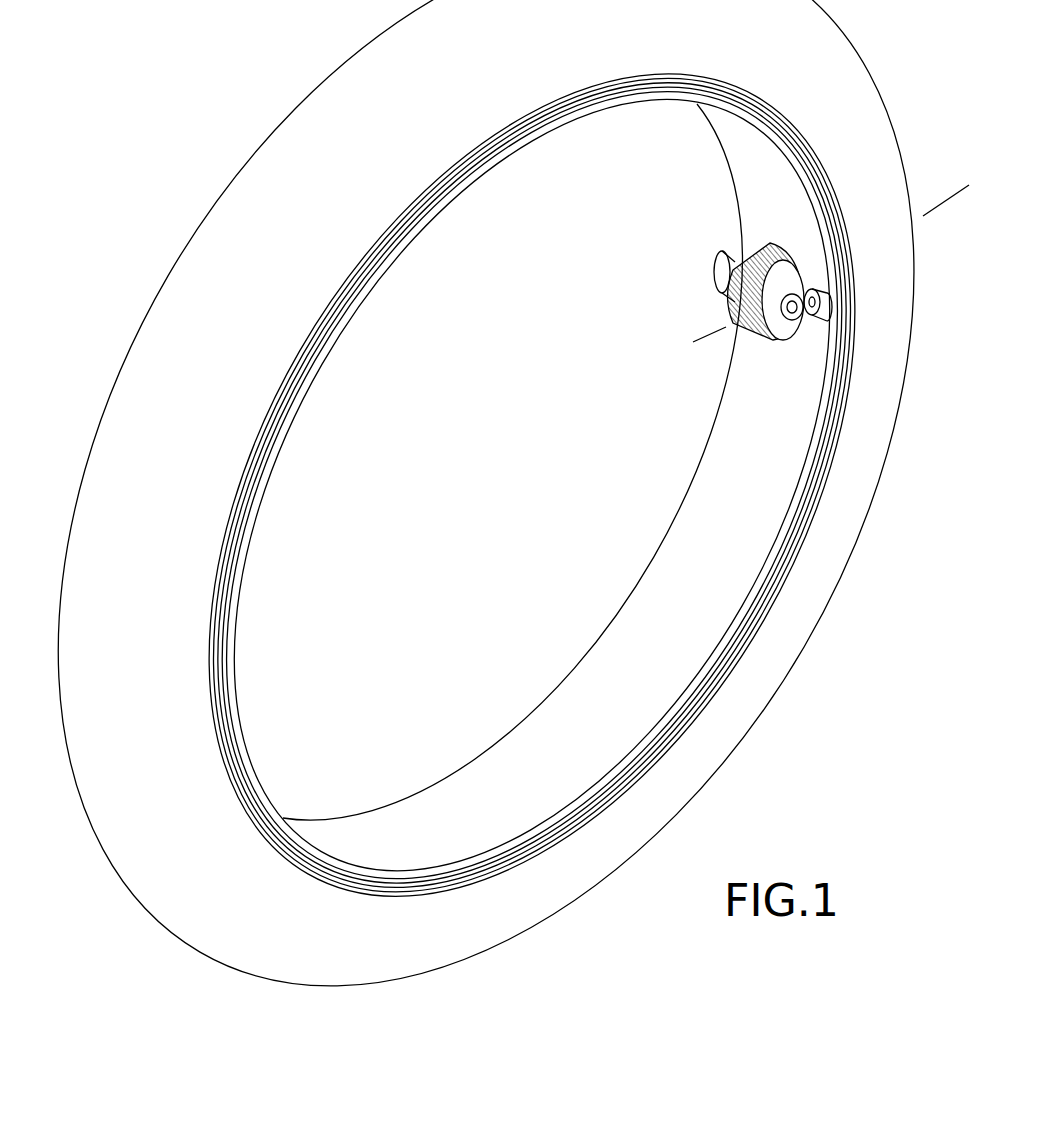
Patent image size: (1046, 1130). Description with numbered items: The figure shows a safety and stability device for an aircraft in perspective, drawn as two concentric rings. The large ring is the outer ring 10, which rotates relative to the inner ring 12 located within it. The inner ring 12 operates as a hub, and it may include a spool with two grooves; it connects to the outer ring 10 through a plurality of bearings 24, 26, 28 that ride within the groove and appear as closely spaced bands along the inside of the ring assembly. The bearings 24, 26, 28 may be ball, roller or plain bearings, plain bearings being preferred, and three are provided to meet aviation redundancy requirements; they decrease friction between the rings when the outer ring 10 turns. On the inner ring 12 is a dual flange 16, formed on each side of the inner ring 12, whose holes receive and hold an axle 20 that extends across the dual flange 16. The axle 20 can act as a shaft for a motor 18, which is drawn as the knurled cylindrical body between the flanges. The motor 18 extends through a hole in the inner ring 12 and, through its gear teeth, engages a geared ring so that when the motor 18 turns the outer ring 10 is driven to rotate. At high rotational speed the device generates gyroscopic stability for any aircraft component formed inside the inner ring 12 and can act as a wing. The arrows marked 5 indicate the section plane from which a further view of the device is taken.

The outer ring 10 is at (717, 722).
The inner ring 12 is at (611, 658).
The dual flange 16 is at (735, 255).
The motor 18 is at (732, 313).
The axle 20 is at (824, 327).
The bearing 24 is at (788, 563).
The bearing 26 is at (767, 597).
The bearing 28 is at (750, 633).
The section line 5- 5 is at (692, 358).